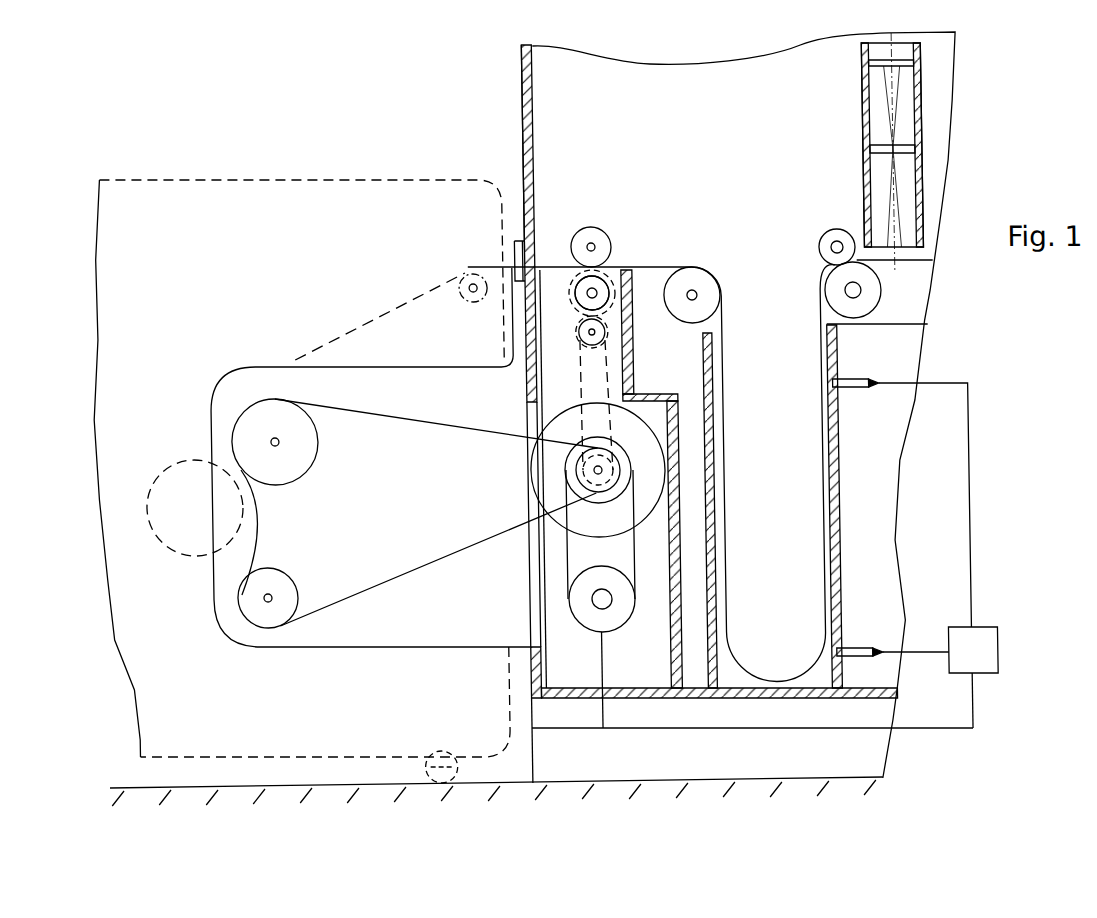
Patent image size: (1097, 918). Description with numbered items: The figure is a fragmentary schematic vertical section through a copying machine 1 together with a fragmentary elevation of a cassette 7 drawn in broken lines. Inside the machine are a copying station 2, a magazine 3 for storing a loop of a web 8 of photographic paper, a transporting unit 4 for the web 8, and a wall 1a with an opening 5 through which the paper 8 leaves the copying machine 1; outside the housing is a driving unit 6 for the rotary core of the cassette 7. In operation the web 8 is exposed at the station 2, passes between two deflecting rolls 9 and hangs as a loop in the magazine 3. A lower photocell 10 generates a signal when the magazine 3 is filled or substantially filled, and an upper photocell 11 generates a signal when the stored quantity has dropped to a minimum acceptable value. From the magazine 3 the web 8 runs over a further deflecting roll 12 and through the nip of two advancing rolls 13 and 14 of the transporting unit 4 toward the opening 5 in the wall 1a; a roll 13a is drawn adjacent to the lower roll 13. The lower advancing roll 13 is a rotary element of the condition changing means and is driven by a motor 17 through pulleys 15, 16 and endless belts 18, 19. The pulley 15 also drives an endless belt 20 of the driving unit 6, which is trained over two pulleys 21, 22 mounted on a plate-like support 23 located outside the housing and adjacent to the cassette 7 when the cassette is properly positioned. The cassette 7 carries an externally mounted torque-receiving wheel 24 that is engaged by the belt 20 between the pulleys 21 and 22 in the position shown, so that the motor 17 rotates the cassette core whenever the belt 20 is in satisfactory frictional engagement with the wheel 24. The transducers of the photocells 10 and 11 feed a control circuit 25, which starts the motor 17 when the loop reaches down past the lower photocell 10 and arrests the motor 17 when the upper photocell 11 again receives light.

The copying machine 1 is at (528, 134).
The wall 1a is at (540, 84).
The copying station 2 is at (872, 135).
The magazine 3 is at (818, 552).
The transporting unit 4 is at (607, 208).
The opening 5 is at (538, 272).
The driving unit 6 is at (374, 342).
The cassette 7 is at (412, 205).
The web 8 is at (932, 266).
The deflecting rolls 9 is at (822, 247).
The lower photocell 10 is at (866, 634).
The upper photocell 11 is at (853, 380).
The further deflecting roll 12 is at (708, 282).
The lower advancing roll 13 is at (578, 288).
The roller 13a is at (582, 305).
The advancing roll 14 is at (613, 247).
The pulley 15 is at (640, 508).
The pulley 16 is at (581, 335).
The motor 17 is at (622, 615).
The endless belt 18 is at (580, 380).
The endless belt 19 is at (633, 552).
The endless belt 20 is at (502, 427).
The pulley 21 is at (309, 443).
The pulley 22 is at (272, 580).
The plate-like support 23 is at (333, 640).
The torque-receiving wheel 24 is at (192, 556).
The control circuit 25 is at (994, 636).